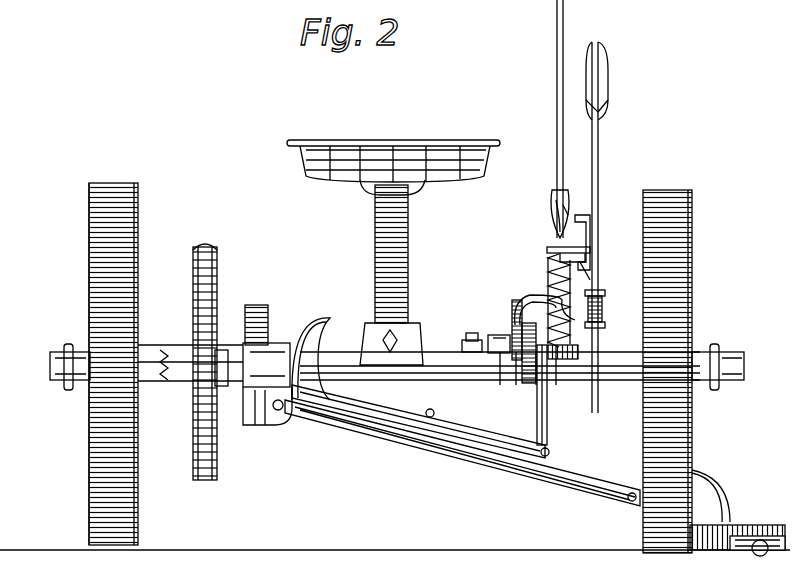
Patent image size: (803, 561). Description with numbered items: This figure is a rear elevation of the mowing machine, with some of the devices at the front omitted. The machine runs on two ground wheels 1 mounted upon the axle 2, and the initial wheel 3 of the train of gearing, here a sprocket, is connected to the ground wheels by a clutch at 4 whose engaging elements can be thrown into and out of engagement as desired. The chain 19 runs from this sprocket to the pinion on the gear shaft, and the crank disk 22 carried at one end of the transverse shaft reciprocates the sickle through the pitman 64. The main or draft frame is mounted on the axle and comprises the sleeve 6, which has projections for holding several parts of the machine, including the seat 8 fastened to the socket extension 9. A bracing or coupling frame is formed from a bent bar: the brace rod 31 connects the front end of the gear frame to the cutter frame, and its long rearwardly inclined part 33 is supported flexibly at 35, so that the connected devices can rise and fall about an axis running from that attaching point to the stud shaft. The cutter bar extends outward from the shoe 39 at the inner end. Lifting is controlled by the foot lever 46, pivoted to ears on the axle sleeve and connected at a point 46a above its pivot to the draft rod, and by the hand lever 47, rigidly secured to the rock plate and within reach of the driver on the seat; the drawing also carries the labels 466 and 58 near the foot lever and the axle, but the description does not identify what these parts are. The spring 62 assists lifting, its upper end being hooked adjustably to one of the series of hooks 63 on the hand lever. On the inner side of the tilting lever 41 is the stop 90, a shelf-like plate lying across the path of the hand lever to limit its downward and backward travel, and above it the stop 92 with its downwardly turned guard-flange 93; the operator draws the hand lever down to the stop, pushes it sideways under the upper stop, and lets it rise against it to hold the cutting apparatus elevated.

The ground wheels 1 is at (90, 441).
The axle 2 is at (50, 366).
The initial wheel of train of gearing 3 is at (208, 482).
The clutch 4 is at (172, 386).
The sleeve 6 is at (483, 380).
The seat 8 is at (449, 190).
The socket extension 9 is at (419, 338).
The chain 19 is at (218, 448).
The crank disk 22 is at (318, 322).
The brace rod 31 is at (372, 410).
The rearwardly inclined part 33 is at (438, 450).
The flexible support point 35 is at (285, 424).
The shoe 39 is at (737, 513).
The tilting lever 41 is at (600, 140).
The foot lever 46 is at (535, 292).
The connection point of foot lever 46a is at (512, 318).
The latch lever lug 466 is at (508, 344).
The hand lever 47 is at (557, 120).
The lever hub 58 is at (510, 385).
The spring 62 is at (548, 268).
The hooks 63 is at (553, 190).
The pitman 64 is at (526, 395).
The stop 90 is at (581, 251).
The stop 92 is at (590, 216).
The guard-flange 93 is at (571, 200).